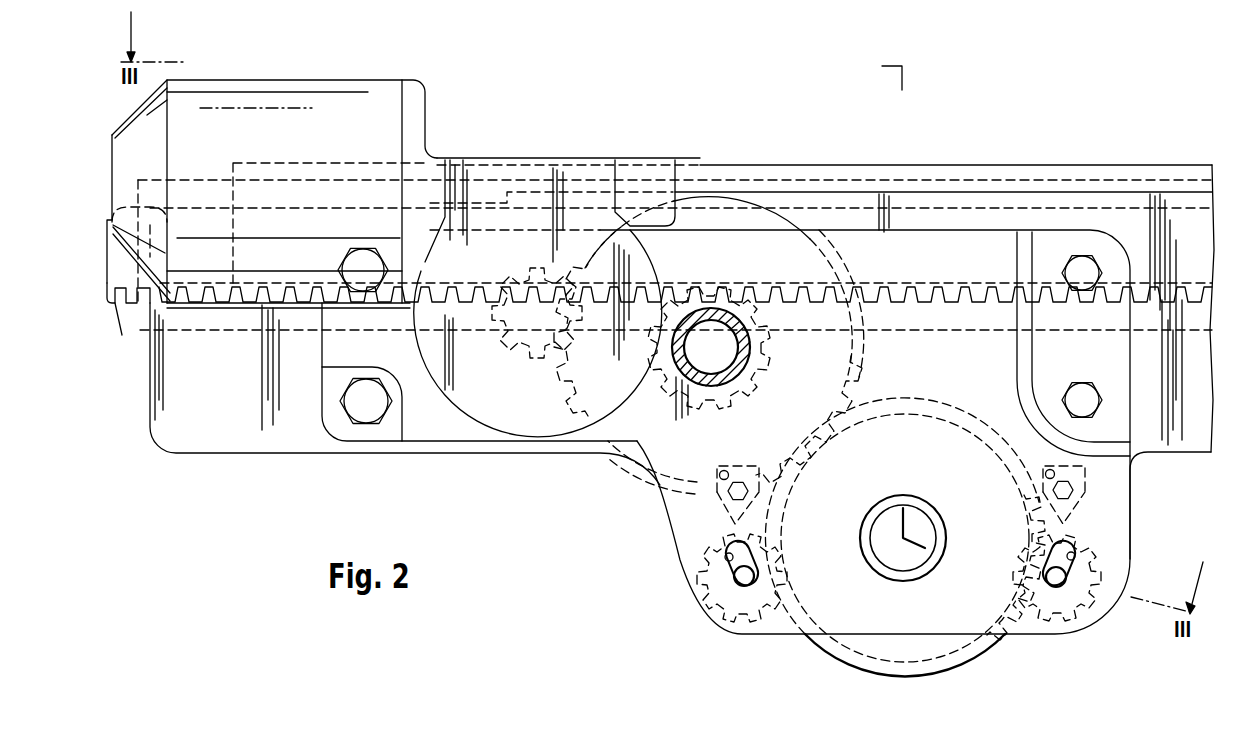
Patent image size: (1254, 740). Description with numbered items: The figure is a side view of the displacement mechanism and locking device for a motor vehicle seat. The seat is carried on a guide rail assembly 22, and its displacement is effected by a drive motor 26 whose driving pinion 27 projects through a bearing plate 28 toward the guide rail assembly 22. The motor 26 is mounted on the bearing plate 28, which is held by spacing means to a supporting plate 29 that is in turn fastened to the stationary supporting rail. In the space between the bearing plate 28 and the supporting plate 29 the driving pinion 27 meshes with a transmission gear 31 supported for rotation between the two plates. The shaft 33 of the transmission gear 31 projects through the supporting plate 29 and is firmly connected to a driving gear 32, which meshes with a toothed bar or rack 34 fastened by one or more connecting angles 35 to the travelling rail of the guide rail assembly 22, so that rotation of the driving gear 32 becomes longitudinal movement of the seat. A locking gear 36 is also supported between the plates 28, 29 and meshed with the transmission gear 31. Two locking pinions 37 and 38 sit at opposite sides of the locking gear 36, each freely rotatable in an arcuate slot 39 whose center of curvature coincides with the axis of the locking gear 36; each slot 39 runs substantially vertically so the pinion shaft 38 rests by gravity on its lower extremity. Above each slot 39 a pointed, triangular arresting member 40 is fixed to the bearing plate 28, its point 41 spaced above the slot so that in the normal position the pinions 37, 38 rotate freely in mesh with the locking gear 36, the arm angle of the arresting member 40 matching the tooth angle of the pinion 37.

The guide rail assembly 22 is at (208, 325).
The drive motor 26 is at (410, 135).
The driving pinion 27 is at (517, 345).
The bearing plate 28 is at (418, 427).
The supporting plate 29 is at (232, 454).
The transmission gear 31 is at (747, 203).
The driving gear 32 is at (773, 393).
The shaft 33 is at (747, 345).
The toothed bar or rack 34 is at (115, 302).
The connecting angle 35 is at (290, 172).
The locking gear 36 is at (975, 652).
The locking pinion 37 is at (723, 607).
The locking pinion shaft 38 is at (742, 586).
The arcuate slot 39 is at (735, 552).
The arresting member 40 is at (728, 502).
The point 41 is at (733, 526).